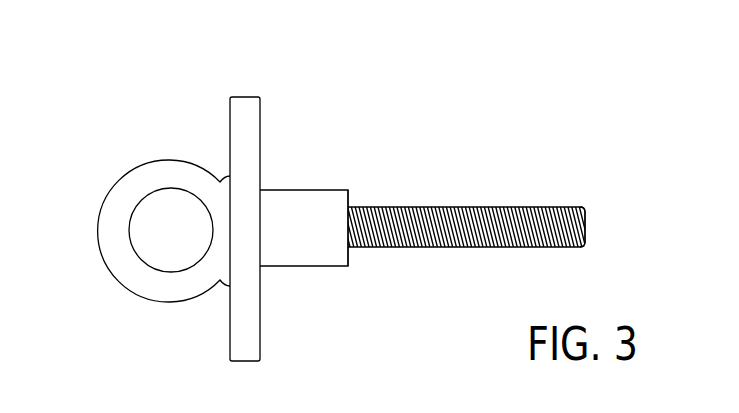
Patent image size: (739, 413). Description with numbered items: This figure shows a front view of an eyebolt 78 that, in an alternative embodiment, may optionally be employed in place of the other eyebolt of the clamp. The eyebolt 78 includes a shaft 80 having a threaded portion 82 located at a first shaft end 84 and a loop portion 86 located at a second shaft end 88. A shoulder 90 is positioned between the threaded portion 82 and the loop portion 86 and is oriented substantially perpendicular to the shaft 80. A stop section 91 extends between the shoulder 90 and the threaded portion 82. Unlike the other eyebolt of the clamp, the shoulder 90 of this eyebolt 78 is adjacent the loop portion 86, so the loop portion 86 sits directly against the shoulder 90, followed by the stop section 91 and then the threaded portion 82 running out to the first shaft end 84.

The eyebolt 78 is at (450, 364).
The shaft 80 is at (302, 266).
The threaded portion 82 is at (417, 207).
The first shaft end 84 is at (587, 222).
The loop portion 86 is at (171, 160).
The second shaft end 88 is at (99, 232).
The shoulder 90 is at (246, 97).
The stop section 91 is at (348, 190).